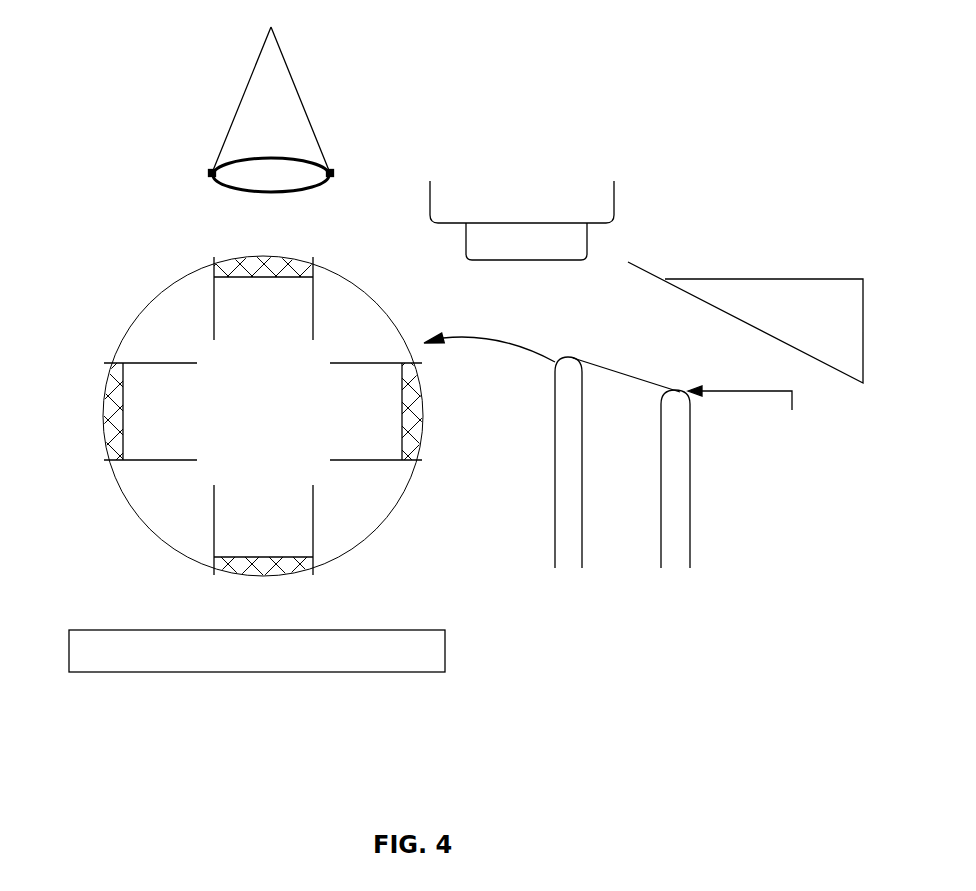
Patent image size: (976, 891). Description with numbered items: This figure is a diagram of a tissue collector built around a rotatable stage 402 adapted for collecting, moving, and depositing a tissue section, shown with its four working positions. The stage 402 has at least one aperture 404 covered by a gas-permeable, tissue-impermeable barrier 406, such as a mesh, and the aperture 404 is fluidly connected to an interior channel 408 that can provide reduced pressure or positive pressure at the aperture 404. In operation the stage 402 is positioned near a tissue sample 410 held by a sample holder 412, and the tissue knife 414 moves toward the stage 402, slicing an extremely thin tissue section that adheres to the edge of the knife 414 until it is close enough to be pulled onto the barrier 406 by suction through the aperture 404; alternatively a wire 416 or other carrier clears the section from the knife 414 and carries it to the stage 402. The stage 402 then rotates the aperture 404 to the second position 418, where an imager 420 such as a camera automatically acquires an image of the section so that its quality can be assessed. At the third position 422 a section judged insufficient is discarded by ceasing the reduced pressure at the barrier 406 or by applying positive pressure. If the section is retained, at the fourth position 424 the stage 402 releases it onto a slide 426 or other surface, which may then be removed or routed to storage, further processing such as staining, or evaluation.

The rotatable stage 402 is at (347, 325).
The aperture 404 is at (435, 408).
The gas-permeable, tissue-impermeable barrier 406 is at (408, 450).
The interior channel 408 is at (350, 437).
The tissue sample 410 is at (543, 247).
The sample holder 412 is at (513, 190).
The tissue knife 414 is at (645, 272).
The wire 416 is at (615, 372).
The second position 418 is at (238, 316).
The imager 420 is at (227, 89).
The third position 422 is at (163, 437).
The fourth position 424 is at (228, 503).
The slide 426 is at (352, 657).